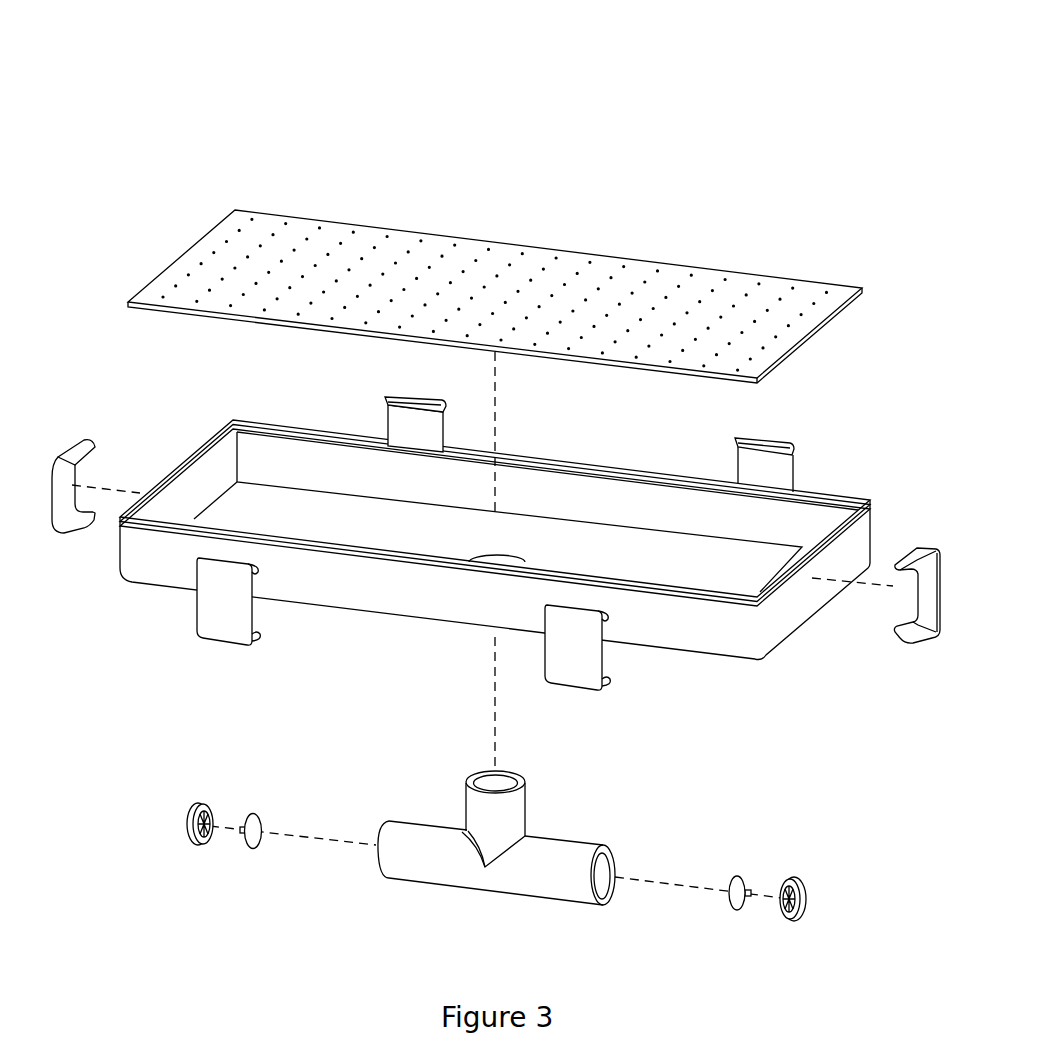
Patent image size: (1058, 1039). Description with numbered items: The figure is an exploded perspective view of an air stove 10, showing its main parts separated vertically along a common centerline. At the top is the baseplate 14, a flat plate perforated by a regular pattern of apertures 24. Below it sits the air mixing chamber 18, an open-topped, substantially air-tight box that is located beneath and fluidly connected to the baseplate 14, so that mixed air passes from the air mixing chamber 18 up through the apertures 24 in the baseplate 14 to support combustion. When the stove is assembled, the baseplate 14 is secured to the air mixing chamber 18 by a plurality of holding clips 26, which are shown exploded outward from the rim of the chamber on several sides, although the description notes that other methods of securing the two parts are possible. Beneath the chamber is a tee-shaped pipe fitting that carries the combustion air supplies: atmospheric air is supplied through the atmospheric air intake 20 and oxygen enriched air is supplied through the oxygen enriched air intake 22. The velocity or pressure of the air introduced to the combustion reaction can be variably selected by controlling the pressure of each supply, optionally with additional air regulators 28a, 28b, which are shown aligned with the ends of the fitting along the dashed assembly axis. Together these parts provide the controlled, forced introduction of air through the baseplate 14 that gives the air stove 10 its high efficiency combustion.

The air stove 10 is at (341, 152).
The baseplate 14 is at (663, 282).
The apertures 24 is at (760, 282).
The air mixing chamber 18 is at (598, 498).
The holding clips 26 is at (77, 450).
The oxygen enriched air intake 22 is at (387, 847).
The atmospheric air intake 20 is at (602, 873).
The air regulator 28a is at (198, 848).
The air regulator 28b is at (789, 922).